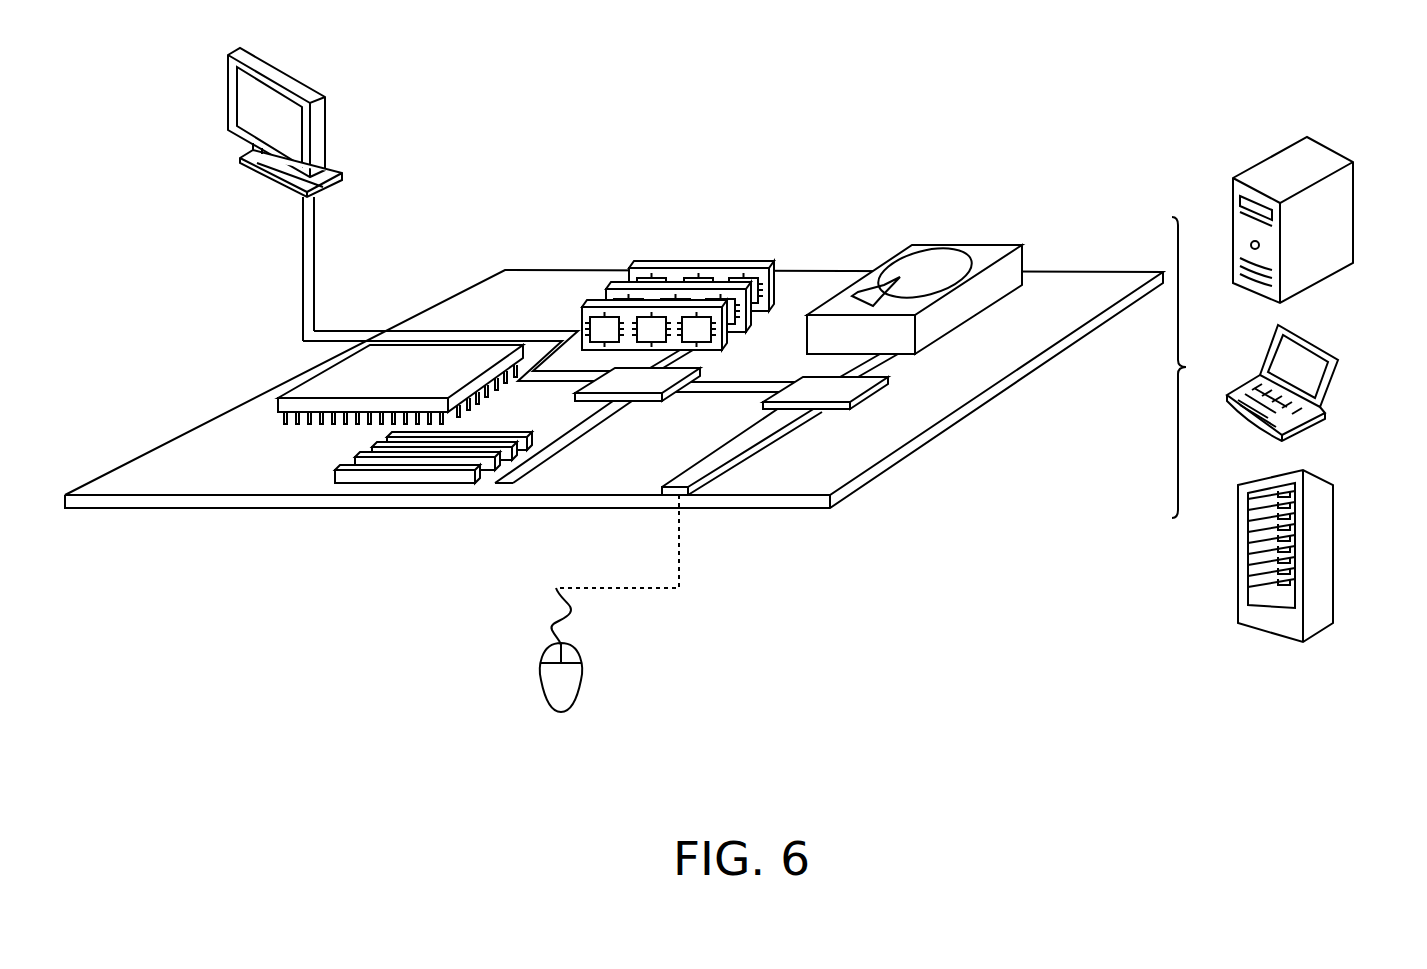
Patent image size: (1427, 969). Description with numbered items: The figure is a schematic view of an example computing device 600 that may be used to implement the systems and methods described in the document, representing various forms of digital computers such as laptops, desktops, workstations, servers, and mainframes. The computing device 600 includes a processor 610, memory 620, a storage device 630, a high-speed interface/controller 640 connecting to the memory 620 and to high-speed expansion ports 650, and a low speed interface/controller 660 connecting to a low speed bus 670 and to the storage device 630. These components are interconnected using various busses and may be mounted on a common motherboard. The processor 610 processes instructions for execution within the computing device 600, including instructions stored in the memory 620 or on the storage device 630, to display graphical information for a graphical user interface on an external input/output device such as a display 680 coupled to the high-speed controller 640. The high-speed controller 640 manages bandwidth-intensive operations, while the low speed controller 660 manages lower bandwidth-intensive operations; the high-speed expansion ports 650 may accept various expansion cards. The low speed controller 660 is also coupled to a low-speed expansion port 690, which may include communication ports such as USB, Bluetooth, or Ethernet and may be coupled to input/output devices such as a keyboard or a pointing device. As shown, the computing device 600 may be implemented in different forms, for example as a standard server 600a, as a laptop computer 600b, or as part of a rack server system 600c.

The computing device 600 is at (782, 115).
The standard server 600a is at (1264, 158).
The laptop computer 600b is at (1318, 344).
The rack server system 600c is at (1328, 537).
The processor 610 is at (278, 398).
The memory 620 is at (697, 262).
The storage device 630 is at (962, 244).
The high-speed interface/controller 640 is at (645, 403).
The high-speed expansion ports 650 is at (336, 471).
The low speed interface/controller 660 is at (813, 385).
The low speed bus 670 is at (765, 447).
The display 680 is at (228, 99).
The low-speed expansion port 690 is at (690, 497).